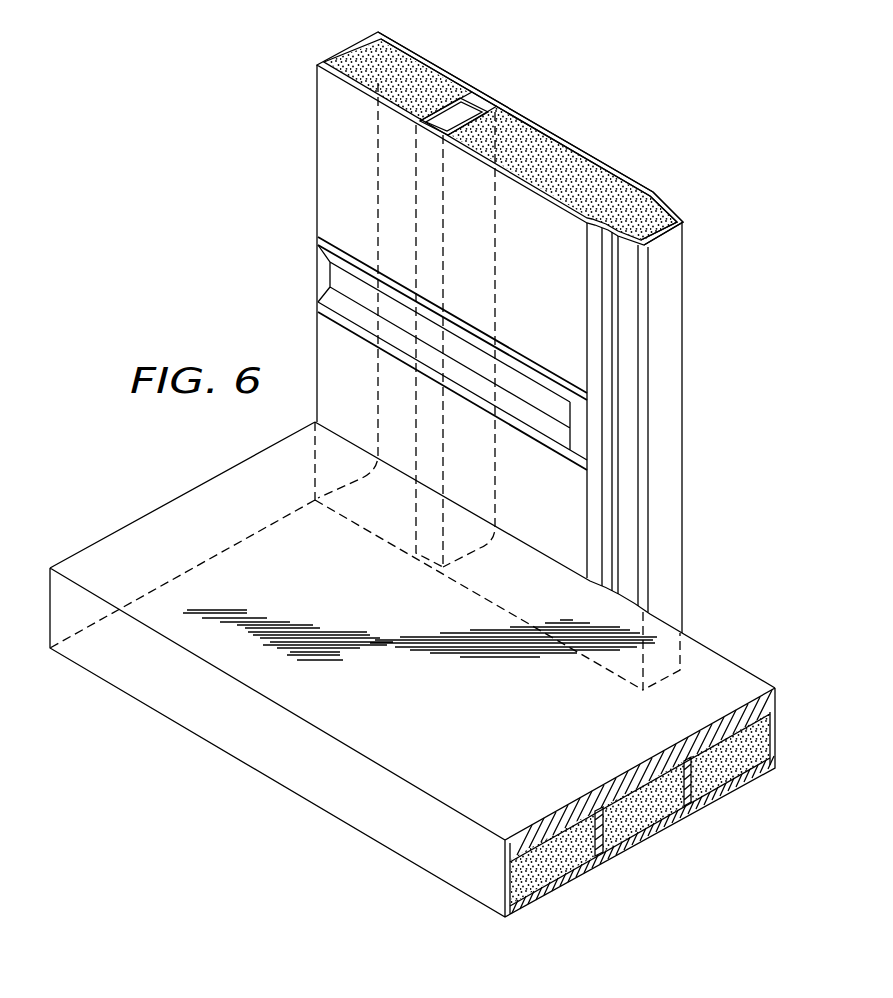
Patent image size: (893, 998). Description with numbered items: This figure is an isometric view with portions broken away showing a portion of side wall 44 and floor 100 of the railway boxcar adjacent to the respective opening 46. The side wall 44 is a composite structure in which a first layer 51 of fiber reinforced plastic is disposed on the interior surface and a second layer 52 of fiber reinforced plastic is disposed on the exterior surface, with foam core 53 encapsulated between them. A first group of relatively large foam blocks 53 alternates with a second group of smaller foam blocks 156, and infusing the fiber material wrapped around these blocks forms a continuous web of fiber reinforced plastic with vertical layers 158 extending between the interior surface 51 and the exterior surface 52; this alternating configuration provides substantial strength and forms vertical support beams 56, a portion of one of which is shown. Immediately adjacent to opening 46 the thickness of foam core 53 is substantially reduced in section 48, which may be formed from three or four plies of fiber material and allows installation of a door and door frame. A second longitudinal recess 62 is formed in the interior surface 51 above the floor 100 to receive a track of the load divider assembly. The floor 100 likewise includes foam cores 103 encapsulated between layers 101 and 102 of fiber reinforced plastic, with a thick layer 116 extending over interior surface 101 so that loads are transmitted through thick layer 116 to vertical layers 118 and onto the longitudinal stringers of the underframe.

The side wall 44 is at (574, 125).
The opening 46 is at (744, 458).
The section 48 is at (677, 214).
The first layer 51 is at (328, 157).
The second layer 52 is at (417, 53).
The foam core 53 is at (353, 63).
The vertical support beam 56 is at (508, 240).
The second longitudinal recess 62 is at (335, 278).
The floor 100 is at (127, 701).
The interior surface 101 is at (446, 691).
The layer 102 is at (648, 838).
The foam cores 103 is at (723, 773).
The thick layer 116 is at (577, 808).
The vertical layers 118 is at (688, 784).
The second foam blocks 156 is at (478, 95).
The vertical layers 158 is at (430, 120).